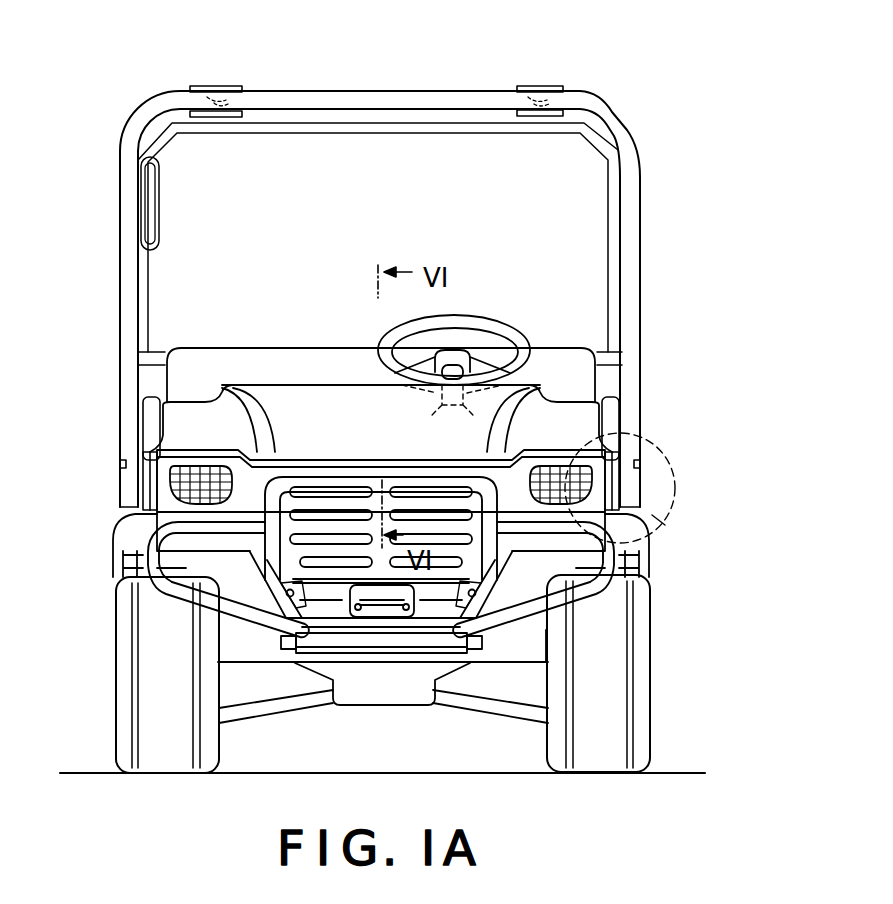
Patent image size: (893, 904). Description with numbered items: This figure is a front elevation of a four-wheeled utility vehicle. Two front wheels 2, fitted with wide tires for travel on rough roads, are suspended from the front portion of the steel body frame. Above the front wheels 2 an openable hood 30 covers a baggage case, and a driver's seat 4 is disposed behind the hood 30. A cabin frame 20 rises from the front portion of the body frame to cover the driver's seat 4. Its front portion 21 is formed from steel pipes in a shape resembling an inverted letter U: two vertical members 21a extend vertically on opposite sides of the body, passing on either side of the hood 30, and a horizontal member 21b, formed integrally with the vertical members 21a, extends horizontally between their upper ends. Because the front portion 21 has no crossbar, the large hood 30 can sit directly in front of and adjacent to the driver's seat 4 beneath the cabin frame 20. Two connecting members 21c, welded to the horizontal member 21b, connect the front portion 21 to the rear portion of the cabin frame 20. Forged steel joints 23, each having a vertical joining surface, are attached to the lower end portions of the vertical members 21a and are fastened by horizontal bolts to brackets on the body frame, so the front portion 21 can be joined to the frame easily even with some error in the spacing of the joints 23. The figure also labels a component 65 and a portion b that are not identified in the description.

The cabin frame 20 is at (384, 258).
The front portion 21 is at (384, 258).
The vertical members 21a is at (126, 196).
The horizontal member 21b is at (362, 98).
The connecting members 21c is at (247, 97).
The hood 30 is at (277, 400).
The driver's seat 4 is at (318, 358).
The joints 23 is at (130, 485).
The bumper guard 65 is at (162, 507).
The front wheels 2 is at (125, 721).
The bent portion b is at (668, 518).